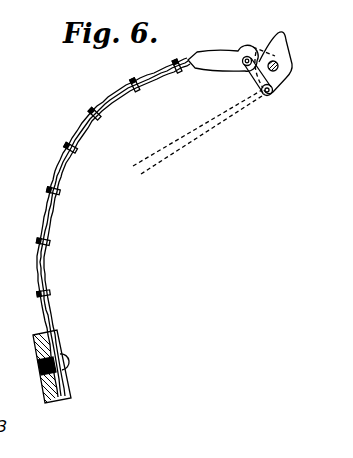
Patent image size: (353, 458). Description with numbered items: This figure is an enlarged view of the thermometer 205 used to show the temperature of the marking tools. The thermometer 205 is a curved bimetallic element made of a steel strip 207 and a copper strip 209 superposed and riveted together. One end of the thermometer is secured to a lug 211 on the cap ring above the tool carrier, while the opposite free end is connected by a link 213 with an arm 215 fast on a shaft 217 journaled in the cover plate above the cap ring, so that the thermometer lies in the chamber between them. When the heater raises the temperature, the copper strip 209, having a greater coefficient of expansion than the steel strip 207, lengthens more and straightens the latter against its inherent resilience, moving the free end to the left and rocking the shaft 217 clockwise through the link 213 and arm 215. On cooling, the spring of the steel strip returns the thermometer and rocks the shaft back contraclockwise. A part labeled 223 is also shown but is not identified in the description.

The thermometer 205 is at (110, 86).
The steel strip 207 is at (58, 162).
The copper strip 209 is at (60, 172).
The lug 211 is at (57, 339).
The link 213 is at (242, 73).
The arm 215 is at (276, 85).
The shaft 217 is at (279, 64).
The clip 223 is at (5, 245).